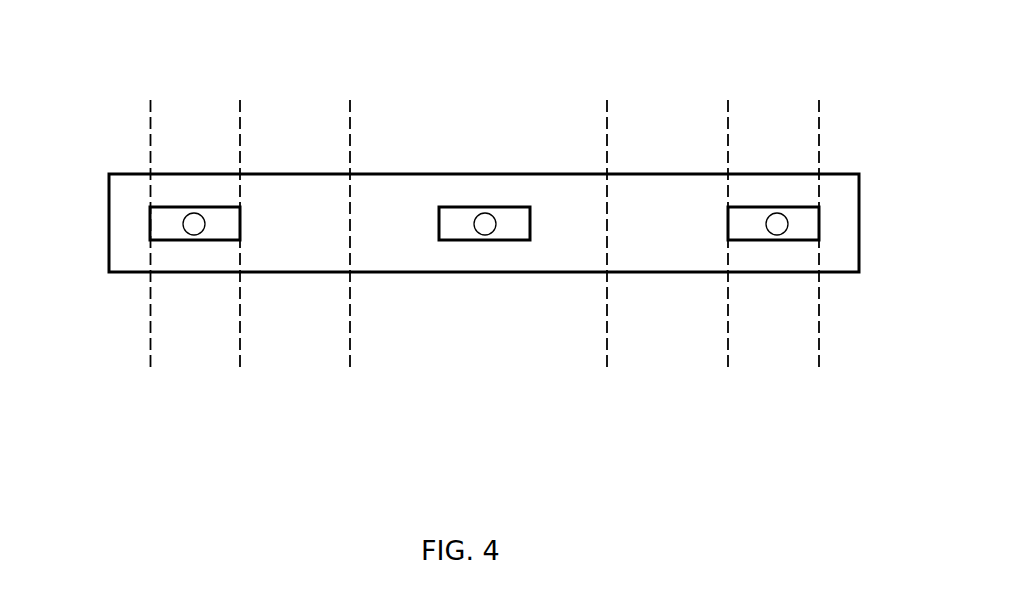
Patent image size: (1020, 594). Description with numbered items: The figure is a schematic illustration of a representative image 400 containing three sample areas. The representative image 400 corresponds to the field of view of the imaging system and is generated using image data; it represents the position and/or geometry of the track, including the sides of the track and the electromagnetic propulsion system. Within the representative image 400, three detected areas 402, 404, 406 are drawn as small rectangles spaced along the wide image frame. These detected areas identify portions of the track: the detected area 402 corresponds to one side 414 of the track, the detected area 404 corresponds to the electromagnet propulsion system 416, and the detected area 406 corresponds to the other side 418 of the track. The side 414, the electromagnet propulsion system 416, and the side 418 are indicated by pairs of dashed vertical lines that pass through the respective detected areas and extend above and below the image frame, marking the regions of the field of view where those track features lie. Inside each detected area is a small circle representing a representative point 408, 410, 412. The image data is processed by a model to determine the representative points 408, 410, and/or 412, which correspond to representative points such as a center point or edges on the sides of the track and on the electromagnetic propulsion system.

The representative image 400 is at (288, 173).
The detected area 402 is at (175, 240).
The detected area 404 is at (496, 207).
The detected area 406 is at (793, 207).
The representative point 408 is at (203, 213).
The representative point 410 is at (474, 240).
The representative point 412 is at (768, 235).
The side 414 is at (150, 141).
The electromagnet propulsion system 416 is at (348, 337).
The side 418 is at (728, 337).